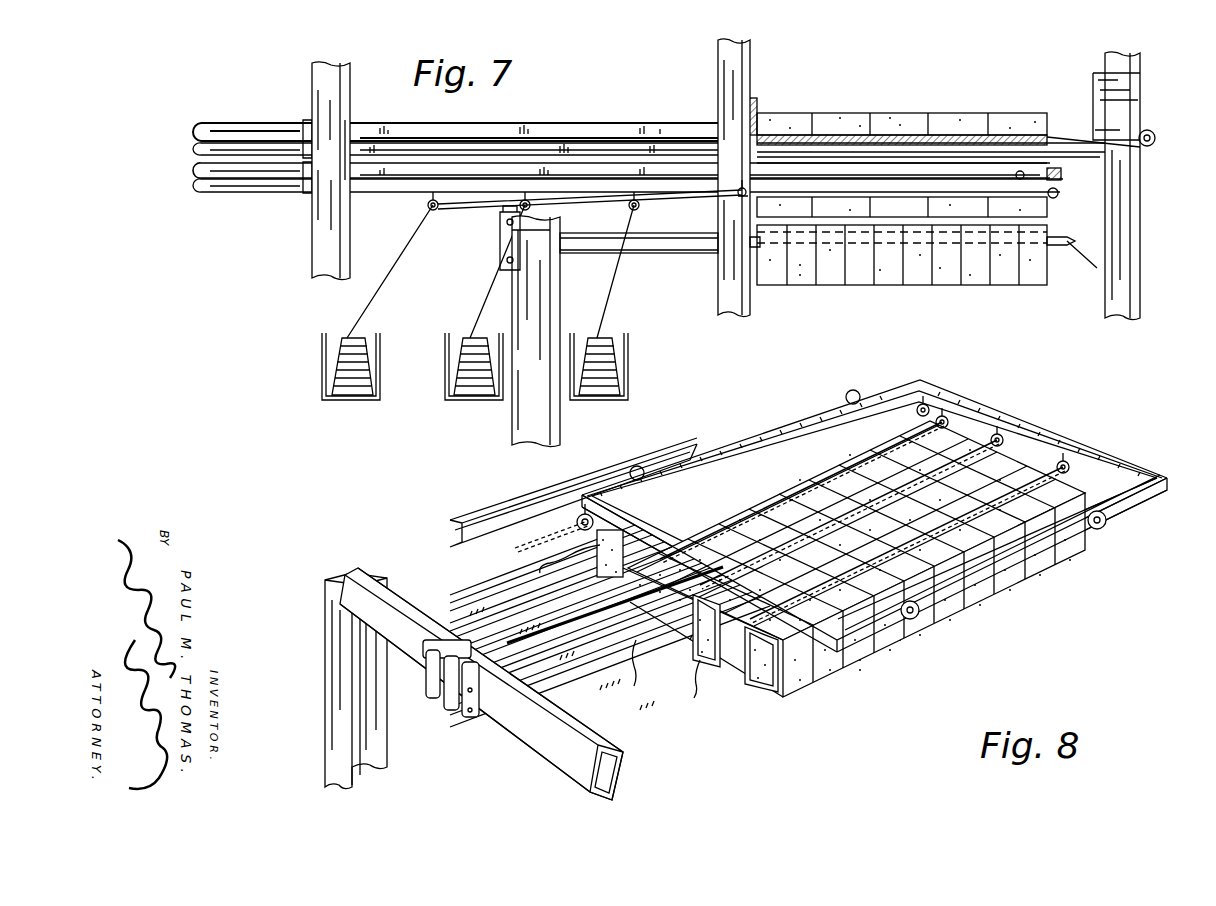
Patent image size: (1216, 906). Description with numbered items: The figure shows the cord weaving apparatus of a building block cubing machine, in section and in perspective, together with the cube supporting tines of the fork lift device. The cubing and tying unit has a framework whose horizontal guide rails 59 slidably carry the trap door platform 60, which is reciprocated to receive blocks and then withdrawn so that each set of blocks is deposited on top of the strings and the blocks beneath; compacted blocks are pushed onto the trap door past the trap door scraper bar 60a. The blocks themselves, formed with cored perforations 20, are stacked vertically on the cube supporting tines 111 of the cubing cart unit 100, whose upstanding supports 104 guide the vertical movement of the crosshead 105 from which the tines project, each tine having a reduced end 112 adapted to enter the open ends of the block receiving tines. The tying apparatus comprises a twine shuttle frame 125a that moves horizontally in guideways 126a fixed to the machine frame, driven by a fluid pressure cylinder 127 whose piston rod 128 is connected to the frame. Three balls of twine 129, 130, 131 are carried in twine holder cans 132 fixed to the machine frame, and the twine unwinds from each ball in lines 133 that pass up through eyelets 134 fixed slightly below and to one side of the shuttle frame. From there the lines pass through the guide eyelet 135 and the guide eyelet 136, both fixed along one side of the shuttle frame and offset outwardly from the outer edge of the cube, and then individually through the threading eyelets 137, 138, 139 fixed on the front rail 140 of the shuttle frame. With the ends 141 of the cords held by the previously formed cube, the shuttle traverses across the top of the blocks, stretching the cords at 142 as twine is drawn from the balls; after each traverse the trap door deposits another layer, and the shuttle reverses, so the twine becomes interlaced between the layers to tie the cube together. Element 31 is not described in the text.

In FIG. 8, the cored perforations 20 is at (777, 668).
In FIG. 7, the tile blocks 31 is at (908, 108).
In FIG. 7, the horizontal guide rails 59 is at (620, 125).
In FIG. 7, the trap door platform 60 is at (944, 135).
In FIG. 7, the trap door scraper bar 60a is at (757, 110).
In FIG. 8, the cubing cart unit 100 is at (520, 728).
In FIG. 8, the upstanding supports 104 is at (325, 692).
In FIG. 8, the crosshead 105 is at (620, 738).
In FIG. 7, the cube supporting tines 111 is at (598, 246).
In FIG. 8, the cube supporting tines 111 is at (640, 668).
In FIG. 7, the reduced end 112 is at (1062, 244).
In FIG. 8, the twine shuttle frame 125a is at (1131, 503).
In FIG. 7, the guideways 126a is at (1086, 172).
In FIG. 7, the fluid pressure cylinder 127 is at (244, 190).
In FIG. 7, the piston rod 128 is at (390, 187).
In FIG. 7, the ball of twine 129 is at (342, 336).
In FIG. 7, the ball of twine 130 is at (470, 336).
In FIG. 7, the ball of twine 131 is at (610, 336).
In FIG. 7, the twine holder cans 132 is at (342, 400).
In FIG. 7, the lines 133 is at (392, 287).
In FIG. 7, the eyelets 134 is at (436, 210).
In FIG. 7, the guide eyelet 135 is at (736, 196).
In FIG. 8, the guide eyelet 135 is at (570, 500).
In FIG. 8, the guide eyelet 136 is at (931, 402).
In FIG. 8, the threading eyelet 137 is at (951, 414).
In FIG. 8, the threading eyelet 138 is at (1000, 436).
In FIG. 8, the threading eyelet 139 is at (1063, 460).
In FIG. 8, the front rail 140 is at (1120, 468).
In FIG. 8, the ends of the twine cords 141 is at (540, 571).
In FIG. 8, the stretched cords 142 is at (913, 473).